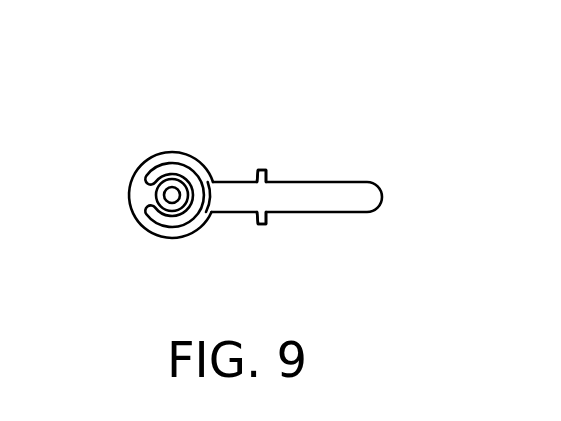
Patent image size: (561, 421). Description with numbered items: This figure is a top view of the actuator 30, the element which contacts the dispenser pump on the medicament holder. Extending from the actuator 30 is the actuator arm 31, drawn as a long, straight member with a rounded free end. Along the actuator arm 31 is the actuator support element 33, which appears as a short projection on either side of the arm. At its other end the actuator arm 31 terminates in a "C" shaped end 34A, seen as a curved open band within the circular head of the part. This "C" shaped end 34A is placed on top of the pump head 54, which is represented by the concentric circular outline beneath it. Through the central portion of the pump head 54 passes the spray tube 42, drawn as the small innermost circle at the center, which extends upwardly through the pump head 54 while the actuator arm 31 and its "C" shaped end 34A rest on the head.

The actuator 30 is at (337, 182).
The actuator arm 31 is at (230, 193).
The actuator support element 33 is at (267, 213).
The "C" shaped end 34A is at (177, 162).
The spray tube 42 is at (174, 199).
The pump head 54 is at (156, 195).